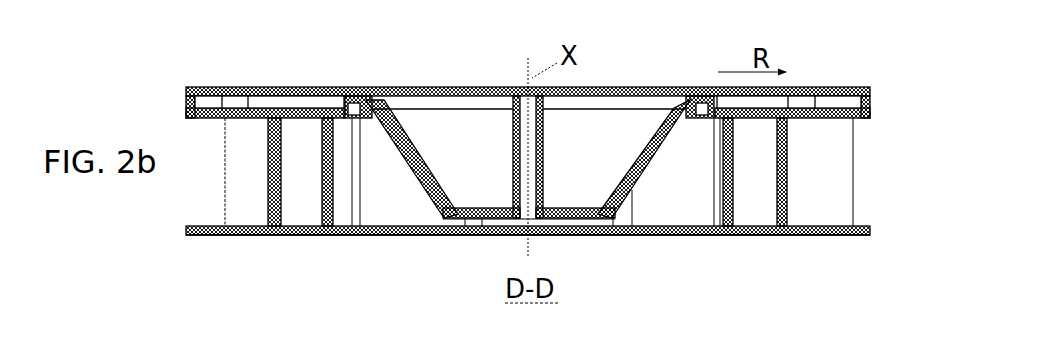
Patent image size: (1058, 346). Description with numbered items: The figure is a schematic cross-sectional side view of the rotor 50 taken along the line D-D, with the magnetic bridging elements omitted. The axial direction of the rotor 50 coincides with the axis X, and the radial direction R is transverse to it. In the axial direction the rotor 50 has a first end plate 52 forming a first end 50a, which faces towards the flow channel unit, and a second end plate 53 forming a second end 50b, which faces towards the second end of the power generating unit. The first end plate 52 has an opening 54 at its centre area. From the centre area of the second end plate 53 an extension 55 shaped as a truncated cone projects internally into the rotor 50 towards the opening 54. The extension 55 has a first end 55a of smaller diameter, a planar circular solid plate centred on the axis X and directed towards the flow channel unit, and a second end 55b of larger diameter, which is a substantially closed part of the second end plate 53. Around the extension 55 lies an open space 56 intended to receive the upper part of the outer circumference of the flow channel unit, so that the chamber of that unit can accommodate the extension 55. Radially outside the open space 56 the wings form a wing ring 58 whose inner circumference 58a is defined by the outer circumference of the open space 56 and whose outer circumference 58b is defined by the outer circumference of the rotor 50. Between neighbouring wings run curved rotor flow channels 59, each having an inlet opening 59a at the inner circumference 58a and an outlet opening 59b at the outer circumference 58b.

The rotor 50 is at (229, 59).
The first end of the rotor 50a is at (297, 239).
The second end of the rotor 50b is at (306, 83).
The first end plate 52 is at (813, 237).
The second end plate 53 is at (822, 87).
The opening 54 is at (586, 244).
The extension 55 is at (417, 195).
The first end of the extension 55a is at (500, 221).
The second end of the extension 55b is at (629, 83).
The open space 56 is at (376, 138).
The wing ring 58 is at (212, 170).
The inner circumference of the wing ring 58a is at (703, 201).
The outer circumference of the wing ring 58b is at (859, 176).
The rotor flow channel 59 is at (843, 135).
The inlet opening 59a is at (710, 158).
The outlet opening 59b is at (861, 196).